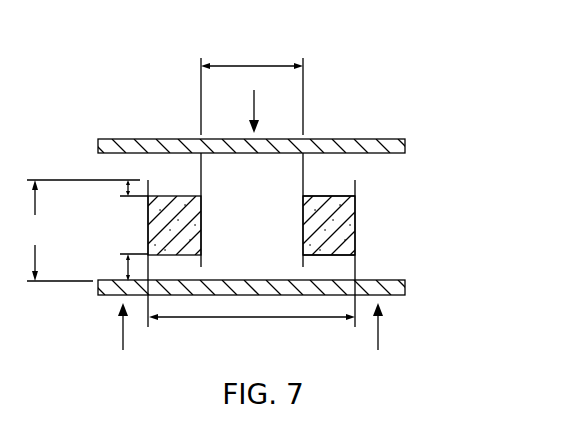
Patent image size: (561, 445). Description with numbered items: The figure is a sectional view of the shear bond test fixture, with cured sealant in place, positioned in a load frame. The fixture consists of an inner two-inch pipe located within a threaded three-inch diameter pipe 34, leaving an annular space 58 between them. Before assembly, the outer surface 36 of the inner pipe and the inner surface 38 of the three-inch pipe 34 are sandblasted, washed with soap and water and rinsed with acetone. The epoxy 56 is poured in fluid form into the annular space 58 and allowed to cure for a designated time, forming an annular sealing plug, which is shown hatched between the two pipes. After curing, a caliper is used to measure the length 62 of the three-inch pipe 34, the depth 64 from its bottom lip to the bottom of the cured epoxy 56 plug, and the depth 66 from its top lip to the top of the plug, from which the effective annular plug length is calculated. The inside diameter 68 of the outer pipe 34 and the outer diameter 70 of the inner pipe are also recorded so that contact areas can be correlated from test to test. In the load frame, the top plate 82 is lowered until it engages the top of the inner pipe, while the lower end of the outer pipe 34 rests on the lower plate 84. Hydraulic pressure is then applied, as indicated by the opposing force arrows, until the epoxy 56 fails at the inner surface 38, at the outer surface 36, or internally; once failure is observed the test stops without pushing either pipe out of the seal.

The 3-inch diameter pipe 34 is at (356, 183).
The outer surface 36 is at (304, 172).
The inner surface 38 is at (355, 273).
The epoxy 56 is at (346, 234).
The annular space 58 is at (336, 173).
The length 62 is at (80, 230).
The depth 64 is at (126, 270).
The depth 66 is at (126, 186).
The inside diameter 68 is at (272, 317).
The outer diameter 70 is at (249, 66).
The top plate 82 is at (406, 146).
The lower plate 84 is at (406, 291).